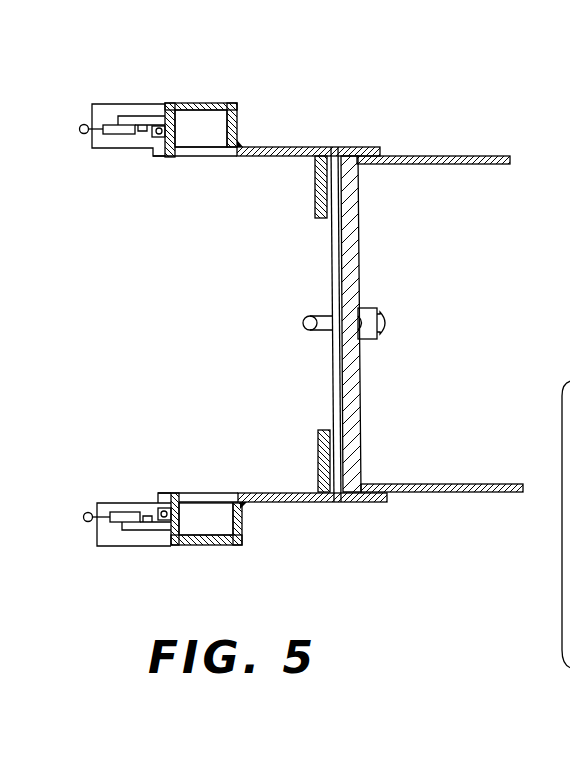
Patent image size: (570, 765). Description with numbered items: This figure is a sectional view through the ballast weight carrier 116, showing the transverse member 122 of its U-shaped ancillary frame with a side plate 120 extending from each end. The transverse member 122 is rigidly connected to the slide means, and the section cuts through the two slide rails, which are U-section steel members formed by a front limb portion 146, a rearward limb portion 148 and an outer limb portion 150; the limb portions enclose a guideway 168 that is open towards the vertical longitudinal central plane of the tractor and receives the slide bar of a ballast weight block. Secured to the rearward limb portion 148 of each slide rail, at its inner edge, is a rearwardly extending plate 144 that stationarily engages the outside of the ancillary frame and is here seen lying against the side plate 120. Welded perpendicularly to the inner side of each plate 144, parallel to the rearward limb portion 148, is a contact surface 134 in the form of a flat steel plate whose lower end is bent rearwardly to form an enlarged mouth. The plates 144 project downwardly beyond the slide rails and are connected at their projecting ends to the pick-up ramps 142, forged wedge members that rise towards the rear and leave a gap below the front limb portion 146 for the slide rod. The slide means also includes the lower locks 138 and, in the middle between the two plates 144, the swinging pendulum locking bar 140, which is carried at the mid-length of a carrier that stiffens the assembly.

The ballast weight carrier 116 is at (190, 321).
The side plate 120 is at (458, 154).
The transverse member 122 is at (361, 418).
The contact surface 134 is at (314, 208).
The lower lock 138 is at (110, 158).
The pendulum locking bar 140 is at (399, 295).
The pick-up ramp 142 is at (108, 104).
The plate 144 is at (323, 130).
The front limb portion 146 is at (178, 140).
The rearward limb portion 148 is at (237, 102).
The outer limb portion 150 is at (222, 102).
The guideway 168 is at (212, 138).